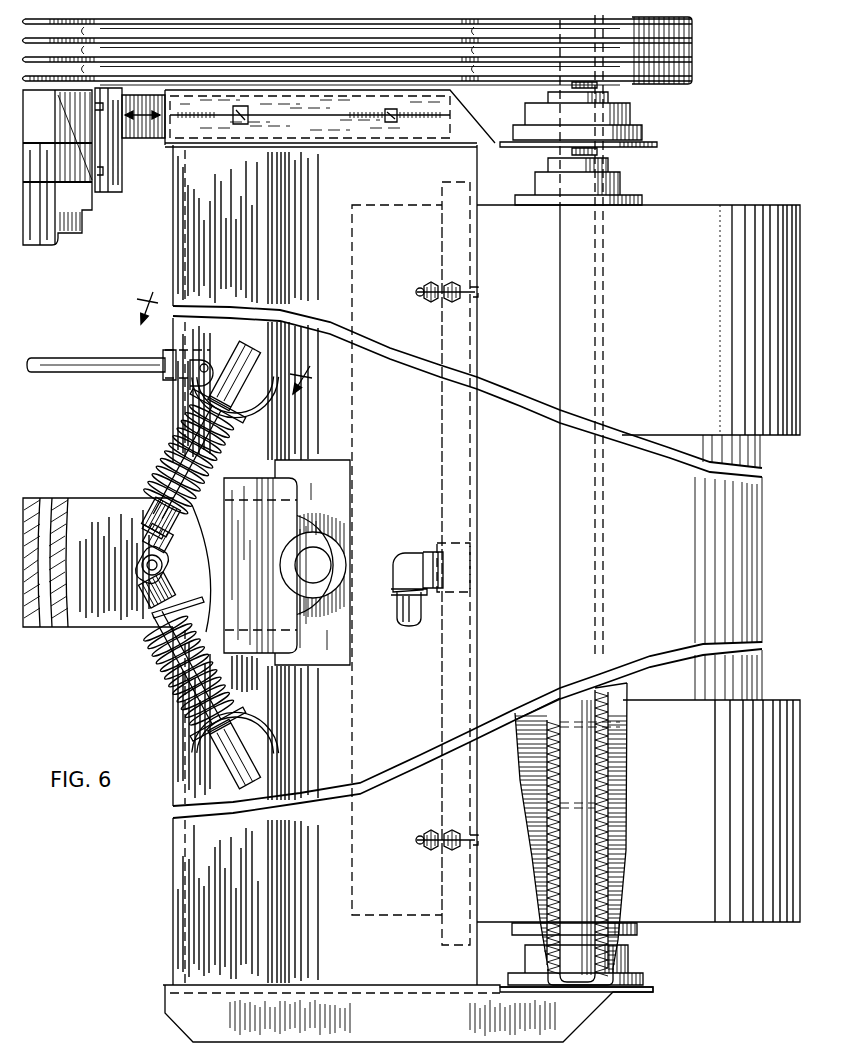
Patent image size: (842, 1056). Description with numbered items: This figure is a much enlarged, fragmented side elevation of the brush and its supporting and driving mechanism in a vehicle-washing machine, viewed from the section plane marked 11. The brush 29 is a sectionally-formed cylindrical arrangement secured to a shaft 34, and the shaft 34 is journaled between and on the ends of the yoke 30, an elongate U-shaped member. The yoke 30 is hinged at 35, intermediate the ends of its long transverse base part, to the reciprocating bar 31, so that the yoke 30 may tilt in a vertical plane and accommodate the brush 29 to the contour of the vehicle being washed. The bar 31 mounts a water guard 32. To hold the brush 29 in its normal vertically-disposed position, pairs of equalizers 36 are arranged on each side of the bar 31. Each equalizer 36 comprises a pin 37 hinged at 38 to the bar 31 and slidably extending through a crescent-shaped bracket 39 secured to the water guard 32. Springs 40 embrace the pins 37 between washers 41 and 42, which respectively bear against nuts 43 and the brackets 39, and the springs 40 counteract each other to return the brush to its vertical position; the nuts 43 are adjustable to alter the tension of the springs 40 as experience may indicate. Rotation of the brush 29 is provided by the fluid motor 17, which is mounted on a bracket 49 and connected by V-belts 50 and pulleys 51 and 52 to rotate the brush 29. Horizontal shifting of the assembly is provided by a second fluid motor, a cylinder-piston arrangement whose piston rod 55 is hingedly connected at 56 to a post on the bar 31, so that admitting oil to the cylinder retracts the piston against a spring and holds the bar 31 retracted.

The section line 11 is at (230, 327).
The fluid motor 17 is at (82, 200).
The brush 29 is at (734, 216).
The yoke 30 is at (648, 150).
The reciprocating bar 31 is at (82, 617).
The water guard 32 is at (182, 877).
The shaft 34 is at (590, 985).
The hinge 35 is at (313, 568).
The equalizers 36 is at (212, 574).
The pins 37 is at (171, 468).
The hinge 38 is at (150, 574).
The crescent-shaped brackets 39 is at (190, 383).
The springs 40 is at (178, 443).
The washers 41 is at (150, 504).
The washers 42 is at (190, 401).
The nuts 43 is at (140, 515).
The bracket 49 is at (147, 138).
The V-belts 50 is at (455, 73).
The pulleys 51 is at (96, 20).
The pulleys 52 is at (690, 22).
The piston rod 55 is at (78, 358).
The hinge connection 56 is at (192, 355).